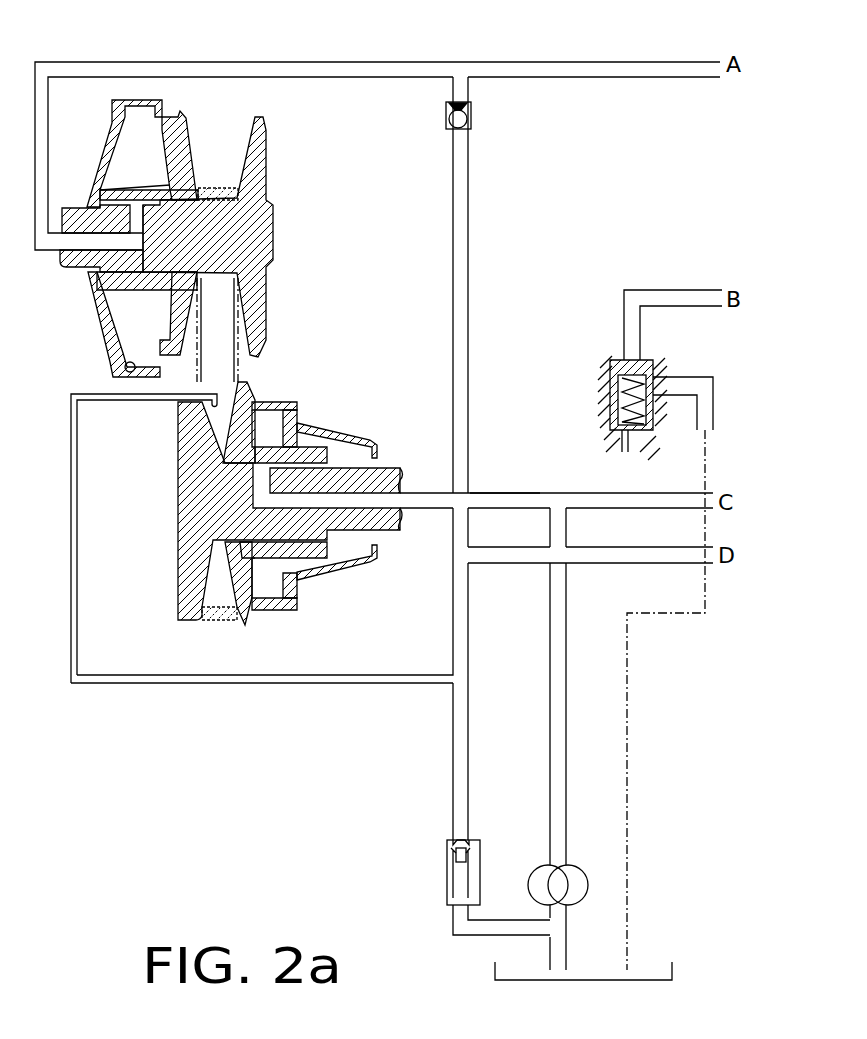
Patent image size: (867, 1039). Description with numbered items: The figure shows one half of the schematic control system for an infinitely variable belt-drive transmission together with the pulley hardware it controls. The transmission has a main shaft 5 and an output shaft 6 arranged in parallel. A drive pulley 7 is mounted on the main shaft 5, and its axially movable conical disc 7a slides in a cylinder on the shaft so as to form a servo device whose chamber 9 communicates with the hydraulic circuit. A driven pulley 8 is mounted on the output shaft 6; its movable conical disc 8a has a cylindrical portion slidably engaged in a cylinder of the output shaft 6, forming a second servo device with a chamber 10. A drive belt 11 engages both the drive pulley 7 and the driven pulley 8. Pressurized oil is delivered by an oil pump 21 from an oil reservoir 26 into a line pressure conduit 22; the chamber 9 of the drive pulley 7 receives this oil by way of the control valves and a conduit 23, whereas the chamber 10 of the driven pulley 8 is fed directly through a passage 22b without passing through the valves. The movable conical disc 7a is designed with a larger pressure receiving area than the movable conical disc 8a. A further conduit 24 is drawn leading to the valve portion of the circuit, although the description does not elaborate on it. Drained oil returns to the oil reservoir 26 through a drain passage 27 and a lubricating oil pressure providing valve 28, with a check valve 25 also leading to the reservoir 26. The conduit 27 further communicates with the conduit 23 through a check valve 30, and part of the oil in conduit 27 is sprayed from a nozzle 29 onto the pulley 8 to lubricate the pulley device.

The main shaft 5 is at (82, 258).
The output shaft 6 is at (392, 480).
The drive pulley 7 is at (280, 140).
The movable conical disc 7a is at (187, 133).
The driven pulley 8 is at (176, 540).
The movable conical disc 8a is at (228, 432).
The chamber 9 is at (145, 166).
The chamber 10 is at (343, 552).
The drive belt 11 is at (218, 622).
The oil pump 21 is at (580, 877).
The line pressure conduit 22 is at (675, 492).
The passage 22b is at (523, 492).
The conduit 23 is at (563, 60).
The conduit 24 is at (678, 288).
The check valve 25 is at (608, 402).
The oil reservoir 26 is at (672, 970).
The drain passage 27 is at (599, 560).
The lubricating oil pressure providing valve 28 is at (443, 880).
The nozzle 29 is at (243, 403).
The check valve 30 is at (472, 119).